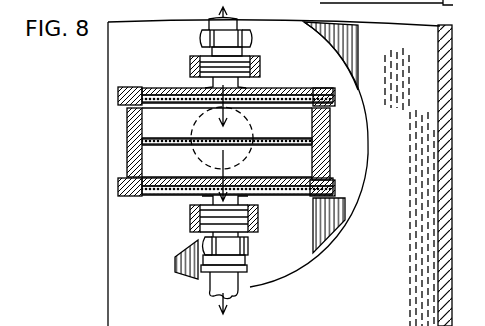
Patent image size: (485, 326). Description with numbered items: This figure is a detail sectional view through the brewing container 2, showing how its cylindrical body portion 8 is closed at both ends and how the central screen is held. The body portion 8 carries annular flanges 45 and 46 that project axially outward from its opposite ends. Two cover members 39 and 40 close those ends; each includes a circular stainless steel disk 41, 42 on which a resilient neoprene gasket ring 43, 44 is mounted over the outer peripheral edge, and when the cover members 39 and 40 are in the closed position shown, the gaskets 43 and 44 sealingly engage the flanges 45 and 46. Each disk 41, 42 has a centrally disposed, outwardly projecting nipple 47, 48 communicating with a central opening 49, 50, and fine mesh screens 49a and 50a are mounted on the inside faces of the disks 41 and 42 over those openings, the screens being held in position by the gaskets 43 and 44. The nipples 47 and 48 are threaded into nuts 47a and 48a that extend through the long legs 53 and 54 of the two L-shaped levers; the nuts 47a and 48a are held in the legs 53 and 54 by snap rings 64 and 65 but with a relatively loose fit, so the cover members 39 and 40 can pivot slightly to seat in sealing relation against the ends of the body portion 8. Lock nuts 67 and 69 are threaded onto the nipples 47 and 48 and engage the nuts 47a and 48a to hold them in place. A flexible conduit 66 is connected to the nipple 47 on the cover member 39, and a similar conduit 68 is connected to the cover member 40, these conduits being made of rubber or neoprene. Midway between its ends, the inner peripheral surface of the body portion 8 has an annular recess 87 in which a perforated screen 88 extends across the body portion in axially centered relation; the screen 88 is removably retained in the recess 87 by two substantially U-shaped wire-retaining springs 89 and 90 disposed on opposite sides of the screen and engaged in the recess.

The brewing container 2 is at (118, 90).
The body portion 8 is at (198, 144).
The cover member 39 is at (148, 87).
The cover member 40 is at (108, 219).
The disk 41 is at (293, 88).
The disk 42 is at (158, 198).
The gasket ring 43 is at (117, 100).
The gasket ring 44 is at (118, 188).
The annular flange 45 is at (340, 112).
The annular flange 46 is at (364, 182).
The nipple 47 is at (220, 60).
The nut 47a is at (197, 62).
The nipple 48 is at (241, 200).
The nut 48a is at (225, 190).
The central opening 49 is at (237, 94).
The screen 49a is at (264, 100).
The central opening 50 is at (192, 208).
The screen 50a is at (260, 190).
The long leg 53 is at (252, 42).
The long leg 54 is at (190, 235).
The snap ring 64 is at (203, 35).
The snap ring 65 is at (224, 270).
The conduit 66 is at (213, 24).
The lock nut 67 is at (216, 28).
The conduit 68 is at (215, 293).
The lock nut 69 is at (206, 248).
The annular recess 87 is at (140, 142).
The screen 88 is at (128, 162).
The wire-retaining spring 89 is at (166, 138).
The wire-retaining spring 90 is at (187, 147).